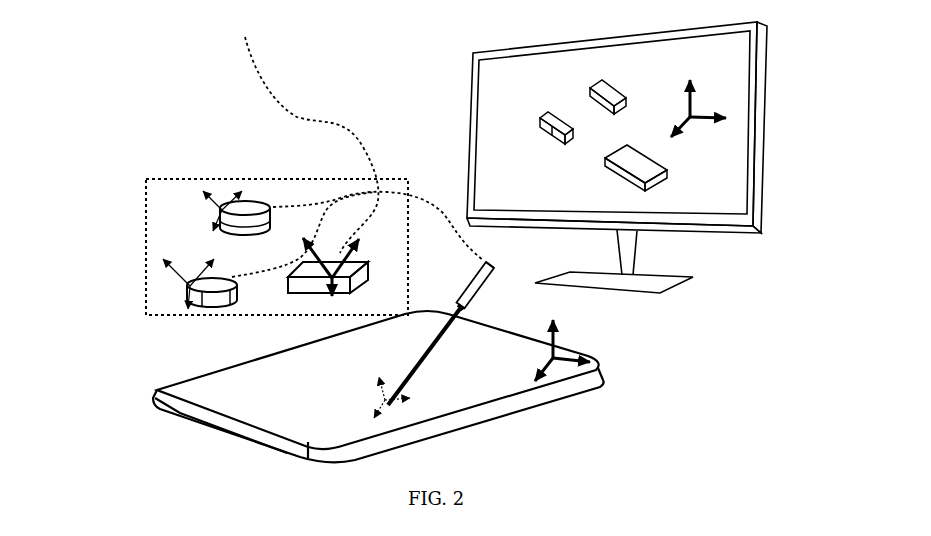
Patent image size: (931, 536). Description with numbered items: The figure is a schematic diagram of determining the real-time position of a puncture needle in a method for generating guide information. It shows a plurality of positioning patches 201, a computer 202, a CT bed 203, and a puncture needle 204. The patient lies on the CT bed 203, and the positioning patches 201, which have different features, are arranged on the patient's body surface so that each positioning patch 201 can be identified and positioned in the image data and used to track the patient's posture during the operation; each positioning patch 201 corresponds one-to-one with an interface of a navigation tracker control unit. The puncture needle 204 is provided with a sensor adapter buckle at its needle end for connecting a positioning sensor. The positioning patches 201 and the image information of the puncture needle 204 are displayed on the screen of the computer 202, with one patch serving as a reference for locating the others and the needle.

The positioning patches 201 is at (143, 205).
The computer 202 is at (765, 131).
The CT bed 203 is at (157, 389).
The puncture needle 204 is at (496, 264).